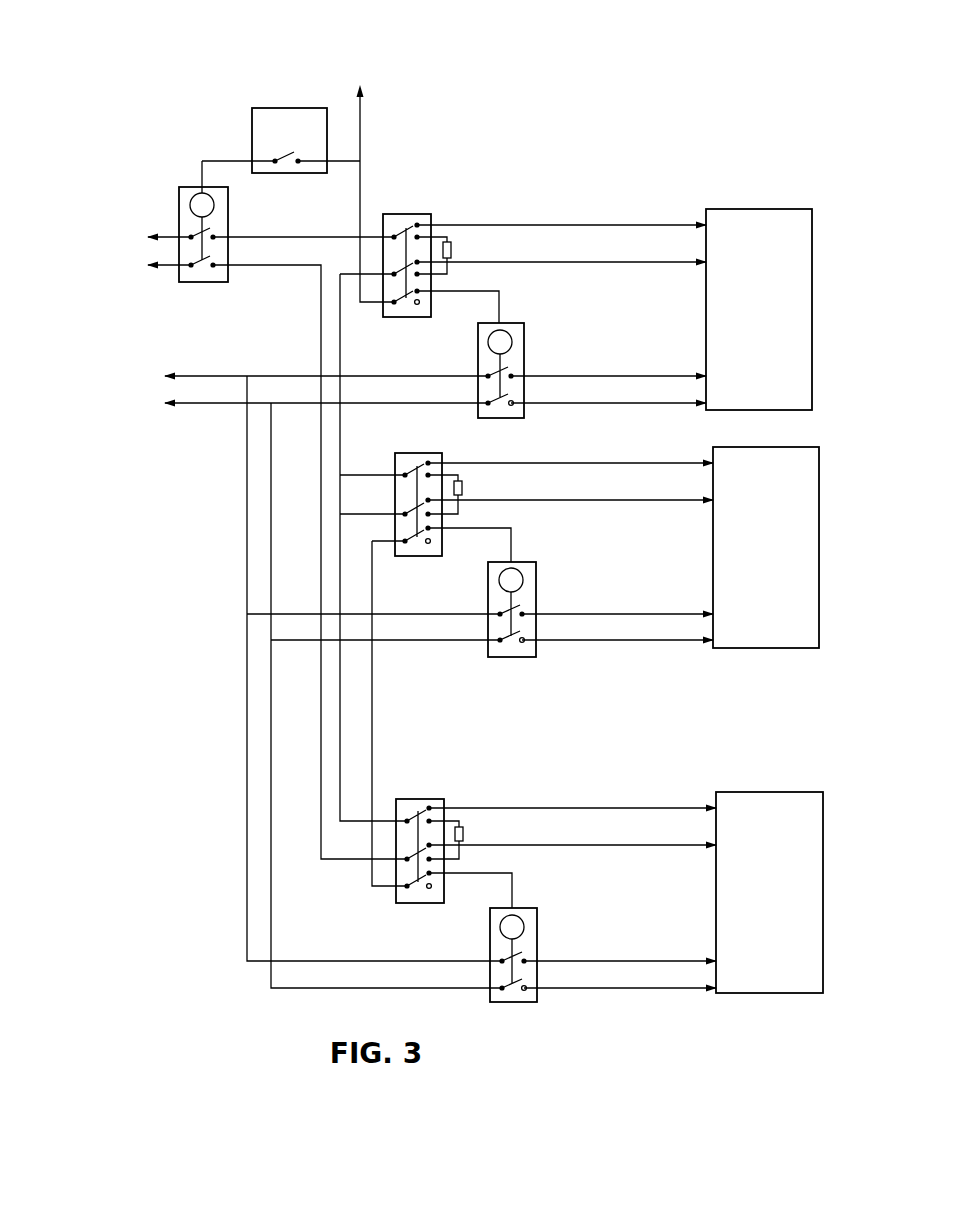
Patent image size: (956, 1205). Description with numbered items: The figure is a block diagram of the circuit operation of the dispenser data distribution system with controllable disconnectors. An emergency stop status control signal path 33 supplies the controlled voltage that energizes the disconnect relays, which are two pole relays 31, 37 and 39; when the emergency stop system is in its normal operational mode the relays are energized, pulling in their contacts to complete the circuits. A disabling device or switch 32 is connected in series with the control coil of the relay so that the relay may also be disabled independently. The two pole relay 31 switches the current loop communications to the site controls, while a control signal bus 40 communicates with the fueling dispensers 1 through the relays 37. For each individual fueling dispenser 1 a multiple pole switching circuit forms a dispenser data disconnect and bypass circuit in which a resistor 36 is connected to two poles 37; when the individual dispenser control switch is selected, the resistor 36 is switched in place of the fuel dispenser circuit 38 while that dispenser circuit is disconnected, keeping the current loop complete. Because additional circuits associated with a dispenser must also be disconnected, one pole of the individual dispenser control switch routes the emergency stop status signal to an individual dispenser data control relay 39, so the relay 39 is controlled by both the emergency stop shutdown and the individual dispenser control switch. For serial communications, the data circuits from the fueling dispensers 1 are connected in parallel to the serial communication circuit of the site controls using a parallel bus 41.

The fueling dispenser 1 is at (765, 342).
The two pole relay 31 is at (200, 283).
The disabling device or switch 32 is at (258, 146).
The emergency stop status control signal path 33 is at (373, 178).
The resistor 36 is at (452, 250).
The two pole relay 37 is at (407, 215).
The fuel dispenser circuit 38 is at (568, 213).
The individual dispenser data control relay 39 is at (515, 334).
The control signal bus 40 is at (328, 428).
The parallel bus 41 is at (232, 500).